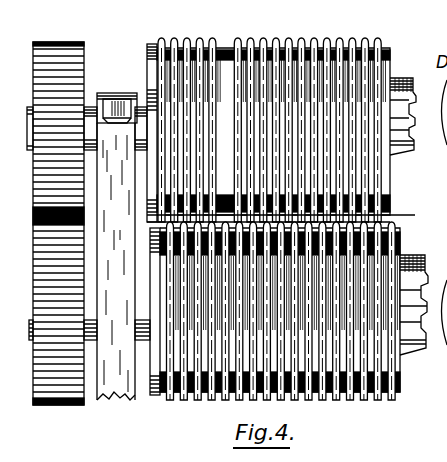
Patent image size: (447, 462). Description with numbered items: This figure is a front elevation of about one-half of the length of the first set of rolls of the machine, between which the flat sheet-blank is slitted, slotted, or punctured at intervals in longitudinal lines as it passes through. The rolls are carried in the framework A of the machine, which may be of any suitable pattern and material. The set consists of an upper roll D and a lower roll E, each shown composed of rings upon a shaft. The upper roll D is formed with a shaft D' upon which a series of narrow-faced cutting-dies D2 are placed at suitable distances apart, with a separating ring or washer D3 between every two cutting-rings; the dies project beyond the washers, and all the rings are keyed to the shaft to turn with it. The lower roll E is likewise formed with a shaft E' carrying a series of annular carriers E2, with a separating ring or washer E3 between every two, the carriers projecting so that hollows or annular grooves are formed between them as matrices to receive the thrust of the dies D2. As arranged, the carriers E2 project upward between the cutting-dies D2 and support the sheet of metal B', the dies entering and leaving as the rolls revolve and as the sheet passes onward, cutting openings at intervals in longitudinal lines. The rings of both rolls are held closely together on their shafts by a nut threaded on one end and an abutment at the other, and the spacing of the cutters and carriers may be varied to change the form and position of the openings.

The framework A is at (117, 246).
The upper roll D is at (257, 117).
The cutting-dies D2 is at (212, 40).
The separating ring or washer D3 is at (276, 40).
The shaft D' is at (403, 104).
The sheet of metal B' is at (282, 210).
The lower roll E is at (269, 325).
The shaft E' is at (414, 293).
The annular carriers E2 is at (392, 400).
The separating ring or washer E3 is at (378, 400).